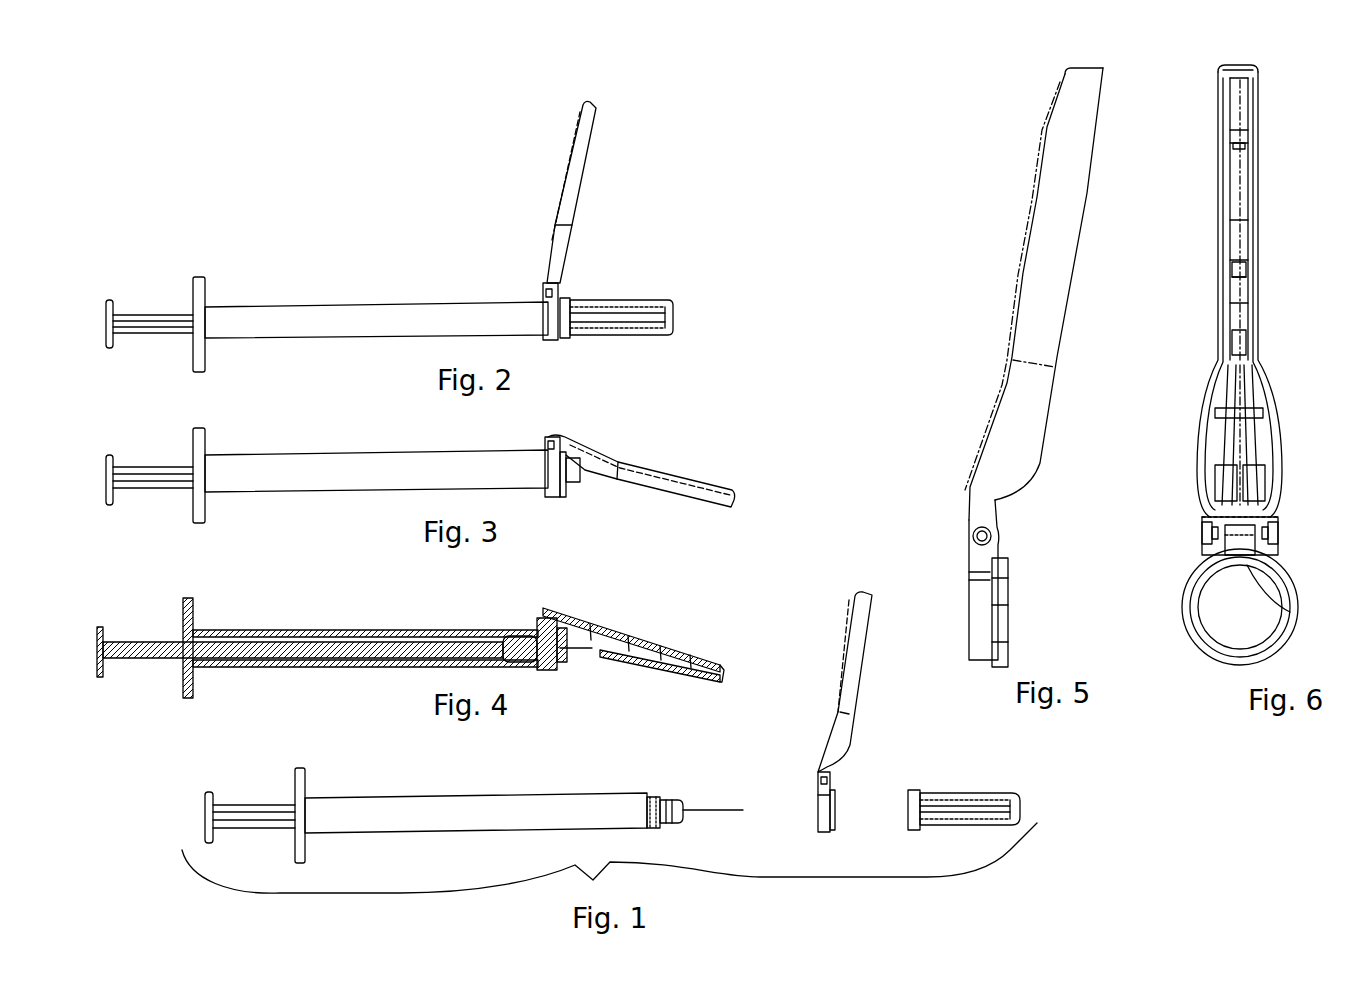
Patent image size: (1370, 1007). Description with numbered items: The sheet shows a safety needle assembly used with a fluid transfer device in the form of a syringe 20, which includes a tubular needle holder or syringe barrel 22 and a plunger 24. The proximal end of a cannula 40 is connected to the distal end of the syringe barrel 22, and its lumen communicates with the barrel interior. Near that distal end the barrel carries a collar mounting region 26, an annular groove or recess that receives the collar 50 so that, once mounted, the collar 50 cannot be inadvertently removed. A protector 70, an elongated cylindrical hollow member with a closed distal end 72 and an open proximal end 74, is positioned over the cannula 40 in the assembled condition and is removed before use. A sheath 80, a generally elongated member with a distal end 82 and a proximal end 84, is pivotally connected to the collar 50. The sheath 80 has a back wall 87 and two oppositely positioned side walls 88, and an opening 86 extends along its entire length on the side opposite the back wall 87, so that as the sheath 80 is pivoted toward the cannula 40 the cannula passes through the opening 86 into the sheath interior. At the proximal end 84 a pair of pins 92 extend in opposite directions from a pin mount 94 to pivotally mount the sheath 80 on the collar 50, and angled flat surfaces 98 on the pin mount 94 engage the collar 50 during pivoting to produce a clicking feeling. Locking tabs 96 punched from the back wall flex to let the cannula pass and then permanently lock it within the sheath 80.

In FIG. 1, the syringe 20 is at (553, 790).
In FIG. 2, the syringe 20 is at (323, 302).
In FIG. 3, the syringe 20 is at (373, 448).
In FIG. 4, the syringe 20 is at (345, 623).
In FIG. 1, the syringe barrel 22 is at (637, 790).
In FIG. 1, the plunger 24 is at (230, 805).
In FIG. 2, the plunger 24 is at (133, 317).
In FIG. 3, the plunger 24 is at (125, 467).
In FIG. 4, the plunger 24 is at (118, 640).
In FIG. 1, the collar mounting region 26 is at (652, 833).
In FIG. 1, the cannula 40 is at (703, 805).
In FIG. 1, the collar 50 is at (815, 822).
In FIG. 1, the protector 70 is at (978, 791).
In FIG. 2, the protector 70 is at (640, 295).
In FIG. 1, the distal end 72 is at (1020, 810).
In FIG. 1, the proximal end 74 is at (908, 808).
In FIG. 1, the sheath 80 is at (862, 703).
In FIG. 2, the sheath 80 is at (592, 178).
In FIG. 5, the sheath 80 is at (1015, 349).
In FIG. 6, the sheath 80 is at (1253, 345).
In FIG. 5, the distal end 82 is at (1088, 66).
In FIG. 6, the distal end 82 is at (1232, 62).
In FIG. 5, the proximal end 84 is at (965, 528).
In FIG. 6, the proximal end 84 is at (1278, 522).
In FIG. 6, the opening 86 is at (1243, 177).
In FIG. 5, the back wall 87 is at (1033, 222).
In FIG. 6, the back wall 87 is at (1240, 113).
In FIG. 5, the side walls 88 is at (1060, 215).
In FIG. 6, the side walls 88 is at (1255, 143).
In FIG. 5, the pins 92 is at (1000, 530).
In FIG. 6, the pins 92 is at (1260, 543).
In FIG. 6, the pin mount 94 is at (1272, 500).
In FIG. 6, the locking tabs 96 is at (1240, 272).
In FIG. 6, the flat surfaces 98 is at (1262, 548).